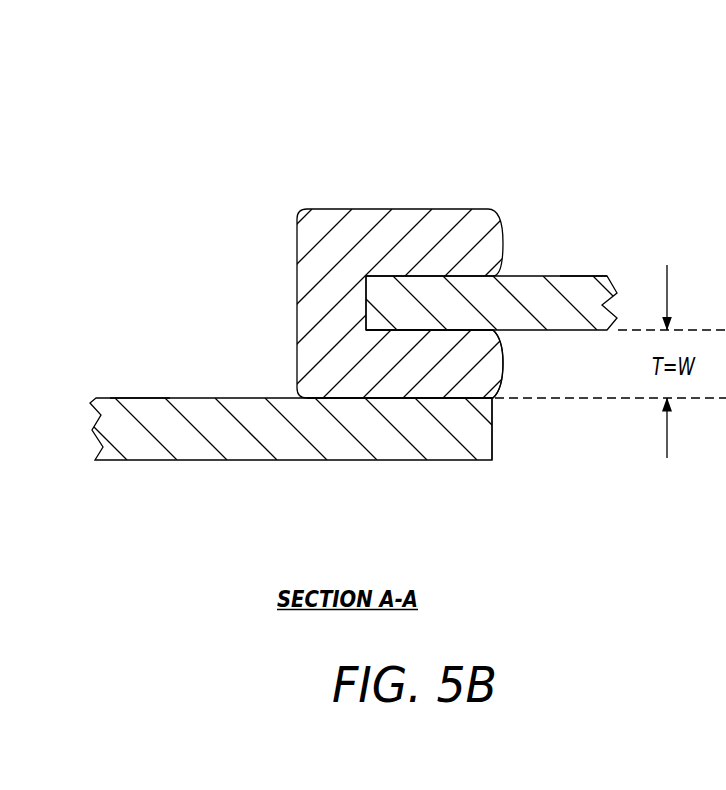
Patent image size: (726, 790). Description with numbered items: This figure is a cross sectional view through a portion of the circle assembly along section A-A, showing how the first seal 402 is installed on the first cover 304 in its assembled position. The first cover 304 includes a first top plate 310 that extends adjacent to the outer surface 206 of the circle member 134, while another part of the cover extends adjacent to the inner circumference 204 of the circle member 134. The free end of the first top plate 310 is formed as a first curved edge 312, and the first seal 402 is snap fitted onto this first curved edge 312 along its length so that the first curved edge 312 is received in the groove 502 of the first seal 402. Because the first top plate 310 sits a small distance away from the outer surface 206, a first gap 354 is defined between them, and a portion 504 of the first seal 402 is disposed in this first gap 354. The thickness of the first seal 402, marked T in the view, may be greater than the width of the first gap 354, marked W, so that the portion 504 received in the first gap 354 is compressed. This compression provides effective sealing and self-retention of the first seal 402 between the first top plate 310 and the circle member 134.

The first seal 402 is at (390, 209).
The first curved edge 312 is at (366, 303).
The groove 502 is at (428, 328).
The first top plate 310 is at (535, 277).
The first cover 304 is at (580, 277).
The outer surface 206 is at (137, 398).
The circle member 134 is at (183, 425).
The inner circumference 204 is at (493, 428).
The portion 504 is at (377, 372).
The first gap 354 is at (508, 358).